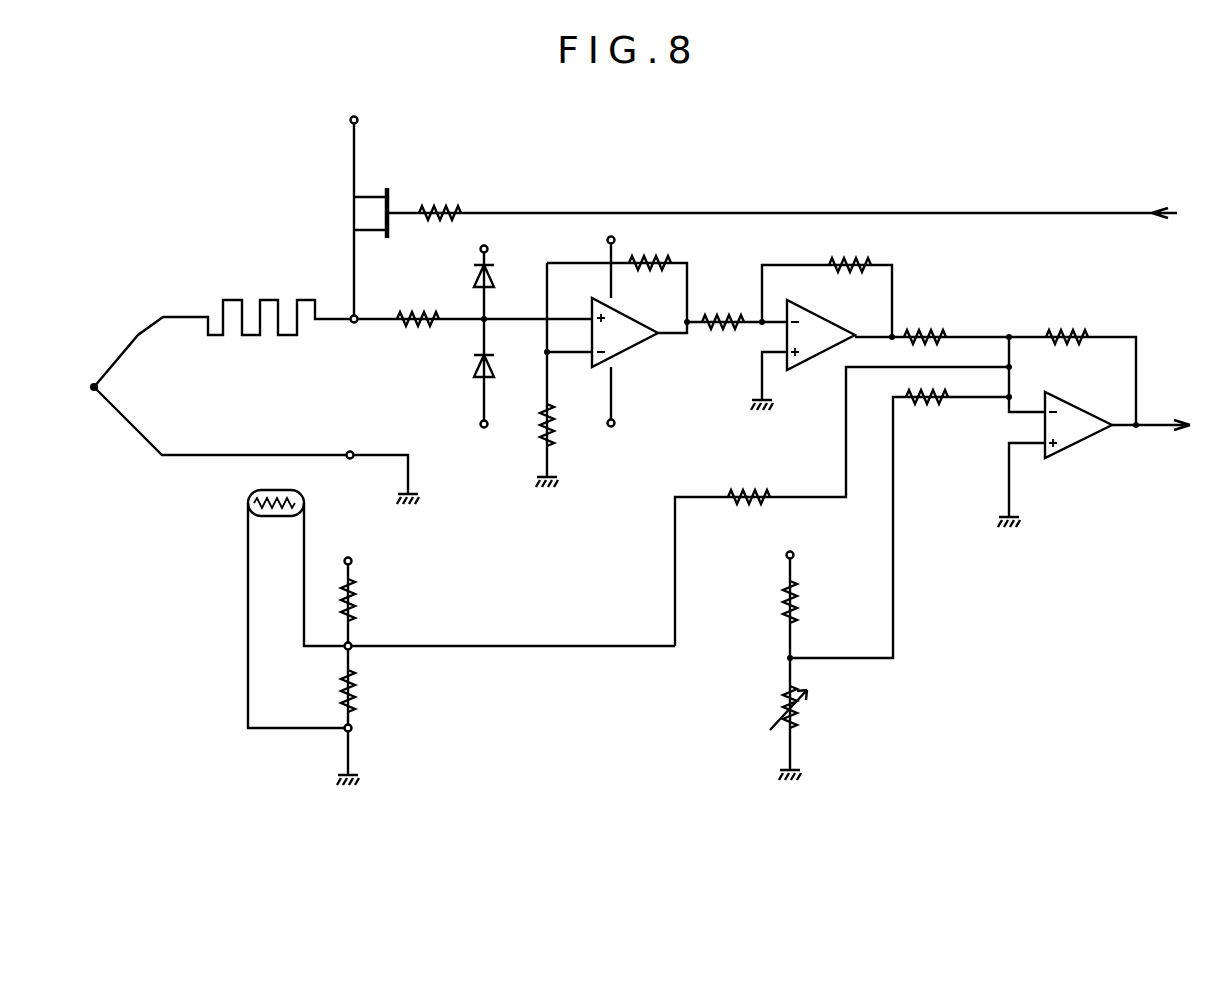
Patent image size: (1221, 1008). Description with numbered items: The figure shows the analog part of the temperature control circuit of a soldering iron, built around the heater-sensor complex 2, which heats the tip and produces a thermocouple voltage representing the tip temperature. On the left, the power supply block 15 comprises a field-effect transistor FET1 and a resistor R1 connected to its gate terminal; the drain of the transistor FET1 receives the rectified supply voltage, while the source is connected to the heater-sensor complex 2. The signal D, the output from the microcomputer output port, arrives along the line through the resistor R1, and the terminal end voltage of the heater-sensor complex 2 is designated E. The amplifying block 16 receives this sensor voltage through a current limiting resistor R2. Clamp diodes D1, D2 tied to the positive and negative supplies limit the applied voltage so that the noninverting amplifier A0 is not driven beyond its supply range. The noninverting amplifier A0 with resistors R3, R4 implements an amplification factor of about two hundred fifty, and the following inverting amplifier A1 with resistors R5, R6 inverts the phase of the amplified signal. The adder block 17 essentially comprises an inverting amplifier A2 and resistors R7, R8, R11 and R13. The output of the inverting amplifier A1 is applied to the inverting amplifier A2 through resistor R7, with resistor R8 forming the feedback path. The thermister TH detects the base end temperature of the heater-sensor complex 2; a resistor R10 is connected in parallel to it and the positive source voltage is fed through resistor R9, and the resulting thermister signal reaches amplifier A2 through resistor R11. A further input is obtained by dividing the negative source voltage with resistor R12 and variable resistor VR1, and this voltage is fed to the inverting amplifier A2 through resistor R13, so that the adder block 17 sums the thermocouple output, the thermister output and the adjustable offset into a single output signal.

The heater-sensor complex 2 is at (226, 411).
The power supply block 15 is at (319, 178).
The amplifying block 16 is at (671, 183).
The adder block 17 is at (1091, 508).
The field-effect transistor FET1 is at (391, 199).
The resistor R1 is at (782, 199).
The current limiting resistor R2 is at (475, 305).
The resistor R3 is at (563, 375).
The resistor R4 is at (617, 294).
The resistor R5 is at (737, 305).
The resistor R6 is at (827, 283).
The resistor R7 is at (932, 324).
The resistor R8 is at (1072, 362).
The resistor R9 is at (385, 594).
The resistor R10 is at (373, 715).
The resistor R11 is at (842, 506).
The resistor R12 is at (796, 597).
The resistor R13 is at (899, 524).
The variable resistor VR1 is at (762, 719).
The clamp diode D1 is at (511, 270).
The clamp diode D2 is at (505, 386).
The noninverting amplifier A0 is at (639, 334).
The inverting amplifier A1 is at (803, 355).
The inverting amplifier A2 is at (1094, 432).
The thermister TH is at (297, 500).
The terminal end voltages of heat-sensor complex E is at (343, 300).
The output from output port PORT1 D is at (987, 212).